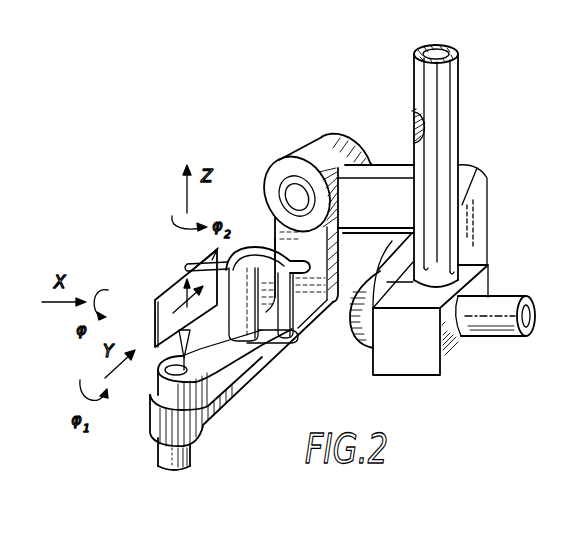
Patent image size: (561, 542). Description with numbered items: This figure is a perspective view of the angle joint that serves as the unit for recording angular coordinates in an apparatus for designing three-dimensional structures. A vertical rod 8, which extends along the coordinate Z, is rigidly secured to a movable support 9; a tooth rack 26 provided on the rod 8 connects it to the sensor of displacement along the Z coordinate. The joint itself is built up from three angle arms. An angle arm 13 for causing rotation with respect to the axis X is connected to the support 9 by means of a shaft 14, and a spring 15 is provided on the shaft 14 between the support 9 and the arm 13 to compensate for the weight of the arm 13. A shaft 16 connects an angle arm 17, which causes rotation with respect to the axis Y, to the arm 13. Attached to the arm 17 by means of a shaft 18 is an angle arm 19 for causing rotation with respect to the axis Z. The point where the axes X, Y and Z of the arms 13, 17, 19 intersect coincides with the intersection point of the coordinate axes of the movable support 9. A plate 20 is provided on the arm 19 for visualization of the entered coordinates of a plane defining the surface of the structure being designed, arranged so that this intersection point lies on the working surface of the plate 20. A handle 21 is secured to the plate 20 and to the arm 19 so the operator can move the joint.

The vertical rod 8 is at (447, 105).
The movable support 9 is at (407, 365).
The angle arm 13 is at (473, 224).
The shaft 14 is at (503, 303).
The spring 15 is at (386, 290).
The shaft 16 is at (335, 139).
The angle arm 17 is at (258, 371).
The shaft 18 is at (192, 452).
The angle arm 19 is at (166, 387).
The plate 20 is at (176, 293).
The handle 21 is at (297, 313).
The tooth rack 26 is at (412, 119).